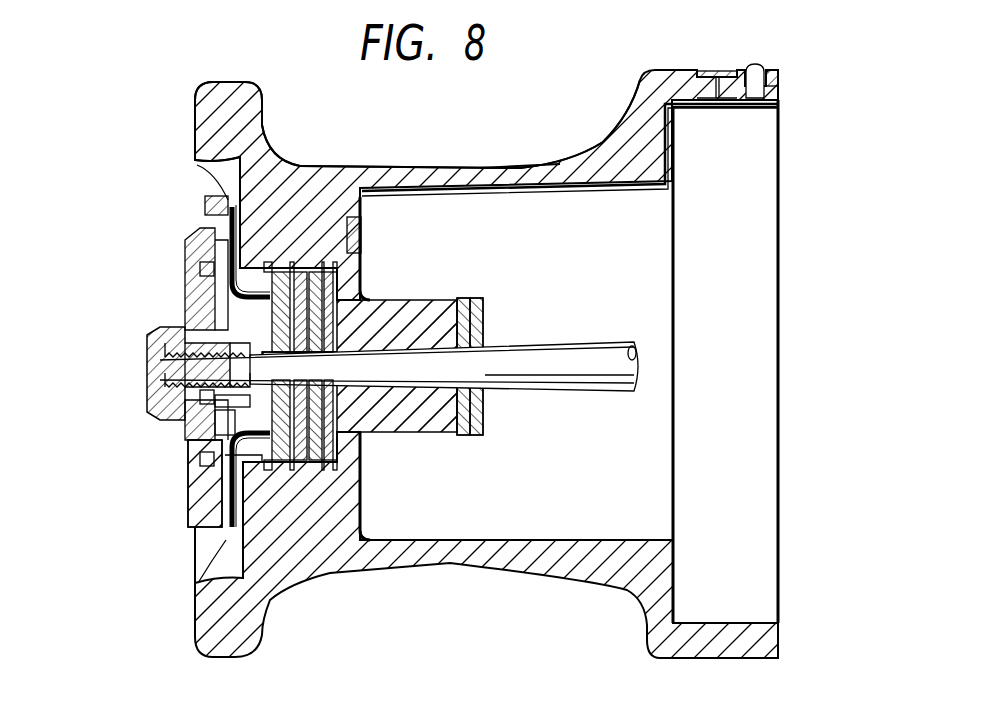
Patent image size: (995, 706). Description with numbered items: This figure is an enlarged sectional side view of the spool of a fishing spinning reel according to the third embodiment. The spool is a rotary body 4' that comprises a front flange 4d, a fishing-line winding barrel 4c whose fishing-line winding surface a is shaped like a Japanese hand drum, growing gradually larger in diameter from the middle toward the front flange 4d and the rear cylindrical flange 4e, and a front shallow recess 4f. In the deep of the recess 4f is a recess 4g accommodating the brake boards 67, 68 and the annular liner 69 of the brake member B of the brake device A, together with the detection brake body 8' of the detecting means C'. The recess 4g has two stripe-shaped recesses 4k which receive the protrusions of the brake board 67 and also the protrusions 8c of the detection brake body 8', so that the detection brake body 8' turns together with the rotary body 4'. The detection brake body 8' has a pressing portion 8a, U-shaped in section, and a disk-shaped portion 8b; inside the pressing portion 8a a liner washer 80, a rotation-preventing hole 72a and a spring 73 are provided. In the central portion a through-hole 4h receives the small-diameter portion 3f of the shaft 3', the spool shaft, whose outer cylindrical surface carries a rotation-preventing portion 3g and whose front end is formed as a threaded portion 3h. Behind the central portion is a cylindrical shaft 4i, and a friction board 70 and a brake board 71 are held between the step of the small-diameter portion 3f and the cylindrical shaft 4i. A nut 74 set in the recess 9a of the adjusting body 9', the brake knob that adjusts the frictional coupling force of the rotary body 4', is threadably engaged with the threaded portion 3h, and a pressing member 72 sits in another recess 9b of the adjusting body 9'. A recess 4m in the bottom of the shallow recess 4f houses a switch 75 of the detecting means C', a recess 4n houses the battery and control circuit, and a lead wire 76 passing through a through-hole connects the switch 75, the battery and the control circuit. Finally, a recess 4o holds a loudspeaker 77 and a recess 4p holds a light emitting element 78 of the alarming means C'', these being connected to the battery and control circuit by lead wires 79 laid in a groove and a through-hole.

The rotary body 4' is at (497, 353).
The front flange 4d is at (231, 84).
The recess 4m is at (262, 138).
The recess 4g is at (366, 190).
The fishing-line winding surface a is at (518, 165).
The fishing-line winding barrel 4c is at (565, 162).
The recess 4o is at (705, 70).
The loudspeaker 77 is at (727, 70).
The light emitting element 78 is at (755, 64).
The alarming means C'' is at (801, 30).
The rear cylindrical flange 4e is at (770, 66).
The recess 4p is at (758, 88).
The front shallow recess 4f is at (240, 163).
The stripe-shaped recesses 4k is at (222, 490).
The recess 4n is at (363, 229).
The cylindrical shaft 4i is at (418, 432).
The lead wires 79 is at (487, 186).
The small-diameter portion 3f is at (418, 300).
The rotation-preventing portion 3g is at (386, 363).
The through-hole 4h is at (441, 300).
The friction board 70 is at (462, 437).
The brake board 71 is at (480, 437).
The shaft 3' is at (399, 401).
The threaded portion 3h is at (150, 390).
The brake member B is at (328, 363).
The brake board 68 is at (256, 230).
The liner 69 is at (305, 470).
The brake board 67 is at (278, 475).
The lead wire 76 is at (312, 232).
The brake device A is at (154, 377).
The detection brake body 8' is at (194, 394).
The disk-shaped portion 8b is at (222, 213).
The protrusions 8c is at (245, 548).
The pressing portion 8a is at (240, 463).
The switch 75 is at (228, 197).
The detecting means C' is at (158, 197).
The pressing member 72 is at (180, 283).
The recess 9b is at (196, 269).
The adjusting body 9' is at (147, 364).
The recess 9a is at (165, 346).
The rotation-preventing hole 72a is at (188, 369).
The nut 74 is at (182, 403).
The spring 73 is at (235, 418).
The liner washer 80 is at (200, 440).